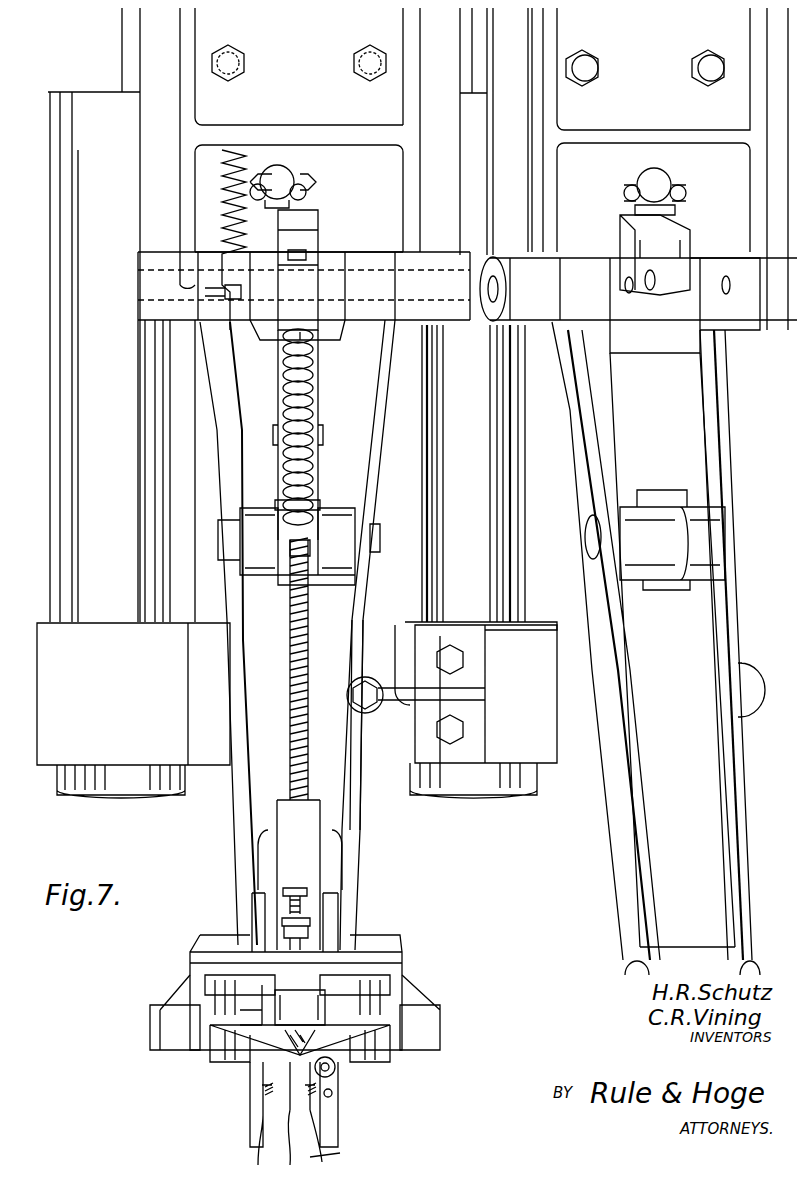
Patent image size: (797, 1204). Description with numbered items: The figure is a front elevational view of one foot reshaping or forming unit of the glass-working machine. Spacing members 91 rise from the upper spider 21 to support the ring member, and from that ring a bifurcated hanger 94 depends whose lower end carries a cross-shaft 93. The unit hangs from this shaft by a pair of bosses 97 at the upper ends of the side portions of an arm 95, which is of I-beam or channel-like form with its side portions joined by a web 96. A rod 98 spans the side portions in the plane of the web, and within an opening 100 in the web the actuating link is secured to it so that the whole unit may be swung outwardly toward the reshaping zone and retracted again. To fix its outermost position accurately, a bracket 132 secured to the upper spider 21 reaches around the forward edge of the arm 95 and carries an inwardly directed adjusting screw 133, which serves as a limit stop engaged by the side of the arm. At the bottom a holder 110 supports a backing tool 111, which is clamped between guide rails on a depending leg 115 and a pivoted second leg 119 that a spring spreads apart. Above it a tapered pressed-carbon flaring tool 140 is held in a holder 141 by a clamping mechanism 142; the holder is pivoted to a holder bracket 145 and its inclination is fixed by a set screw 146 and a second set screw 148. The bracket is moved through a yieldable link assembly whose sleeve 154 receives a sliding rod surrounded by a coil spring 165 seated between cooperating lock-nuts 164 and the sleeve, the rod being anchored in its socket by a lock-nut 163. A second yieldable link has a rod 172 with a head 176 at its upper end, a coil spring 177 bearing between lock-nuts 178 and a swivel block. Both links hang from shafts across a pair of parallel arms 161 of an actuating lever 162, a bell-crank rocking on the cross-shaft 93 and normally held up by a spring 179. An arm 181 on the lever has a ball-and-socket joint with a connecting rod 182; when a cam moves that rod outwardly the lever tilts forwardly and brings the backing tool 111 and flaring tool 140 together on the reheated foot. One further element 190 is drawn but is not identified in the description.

The upper spider 21 is at (44, 768).
The spacing members 91 is at (78, 590).
The cross-shaft 93 is at (496, 300).
The bifurcated hanger 94 is at (408, 190).
The arm 95 is at (360, 462).
The web 96 is at (345, 622).
The bosses 97 is at (578, 262).
The rod 98 is at (590, 542).
The opening 100 is at (660, 492).
The holder 110 is at (240, 1060).
The backing tool 111 is at (342, 1076).
The depending leg 115 is at (258, 1124).
The second leg 119 is at (336, 1126).
The bracket 132 is at (478, 680).
The adjusting screw 133 is at (370, 712).
The flaring tool 140 is at (322, 1008).
The holder 141 is at (262, 1012).
The clamping mechanism 142 is at (258, 916).
The holder bracket 145 is at (405, 962).
The set screw 146 is at (295, 885).
The second set screw 148 is at (312, 936).
The sleeve 154 is at (318, 778).
The parallel arms 161 is at (340, 294).
The actuating lever 162 is at (680, 234).
The lock-nut 163 is at (314, 445).
The lock-nuts 164 is at (312, 562).
The coil spring 165 is at (312, 674).
The rod 172 is at (292, 288).
The head 176 is at (322, 258).
The coil spring 177 is at (312, 478).
The lock-nuts 178 is at (284, 550).
The spring 179 is at (240, 180).
The arm 181 is at (322, 238).
The connecting rod 182 is at (305, 182).
The washer 190 is at (318, 502).